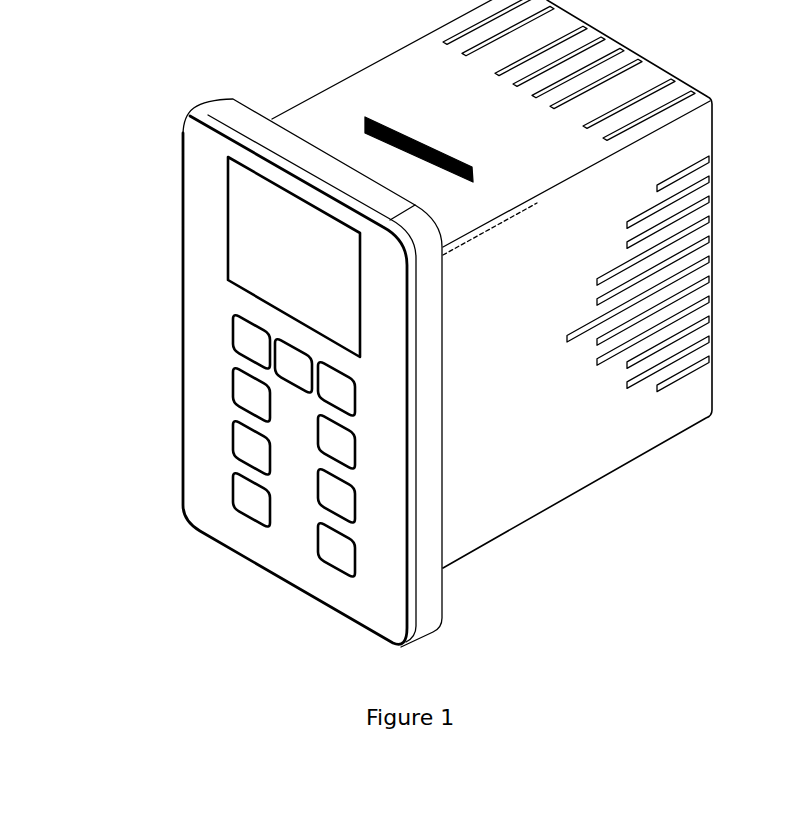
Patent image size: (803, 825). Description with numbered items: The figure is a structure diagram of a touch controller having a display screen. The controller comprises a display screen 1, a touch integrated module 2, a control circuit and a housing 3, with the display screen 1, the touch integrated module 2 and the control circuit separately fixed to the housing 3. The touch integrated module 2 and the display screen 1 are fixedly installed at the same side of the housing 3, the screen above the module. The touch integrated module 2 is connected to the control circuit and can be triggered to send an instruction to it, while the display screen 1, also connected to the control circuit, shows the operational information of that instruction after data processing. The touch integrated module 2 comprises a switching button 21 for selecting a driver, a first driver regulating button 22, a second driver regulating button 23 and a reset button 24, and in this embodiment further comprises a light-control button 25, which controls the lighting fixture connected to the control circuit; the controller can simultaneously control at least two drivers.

The display screen 1 is at (260, 243).
The touch integrated module 2 is at (97, 282).
The switching button 21 is at (242, 323).
The first driver regulating button 22 is at (240, 484).
The second driver regulating button 23 is at (337, 548).
The reset button 24 is at (290, 365).
The light-control button 25 is at (337, 397).
The housing 3 is at (483, 475).